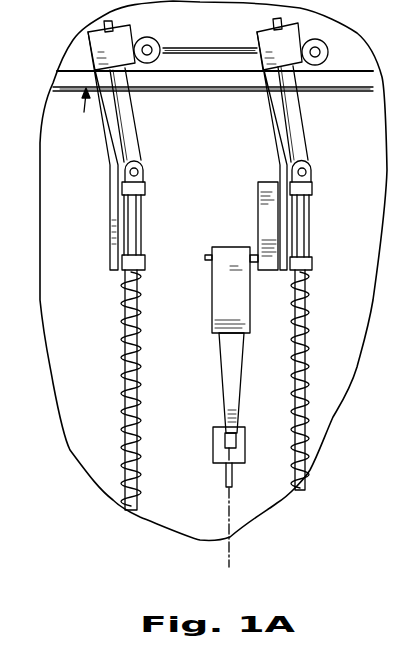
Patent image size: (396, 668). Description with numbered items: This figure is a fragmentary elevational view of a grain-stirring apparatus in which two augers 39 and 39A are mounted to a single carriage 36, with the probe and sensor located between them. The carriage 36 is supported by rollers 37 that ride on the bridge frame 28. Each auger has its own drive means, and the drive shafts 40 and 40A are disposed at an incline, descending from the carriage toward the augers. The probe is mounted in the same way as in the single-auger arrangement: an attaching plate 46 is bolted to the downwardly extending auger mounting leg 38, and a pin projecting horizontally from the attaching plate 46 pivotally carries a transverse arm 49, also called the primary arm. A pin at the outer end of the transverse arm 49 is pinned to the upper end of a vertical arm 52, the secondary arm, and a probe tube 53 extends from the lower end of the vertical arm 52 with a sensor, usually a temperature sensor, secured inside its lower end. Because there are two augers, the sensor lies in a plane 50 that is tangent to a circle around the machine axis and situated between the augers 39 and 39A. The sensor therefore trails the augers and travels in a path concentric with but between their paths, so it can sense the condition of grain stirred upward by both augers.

The bridge frame 28 is at (83, 113).
The carriage 36 is at (207, 52).
The rollers 37 is at (153, 40).
The auger mounting leg 38 is at (284, 218).
The auger 39 is at (303, 377).
The auger 39A is at (135, 373).
The drive shaft 40 is at (300, 123).
The drive shaft 40A is at (135, 128).
The attaching plate 46 is at (260, 207).
The transverse arm 49 is at (213, 293).
The plane 50 is at (231, 547).
The vertical arm 52 is at (233, 388).
The probe tube 53 is at (234, 483).